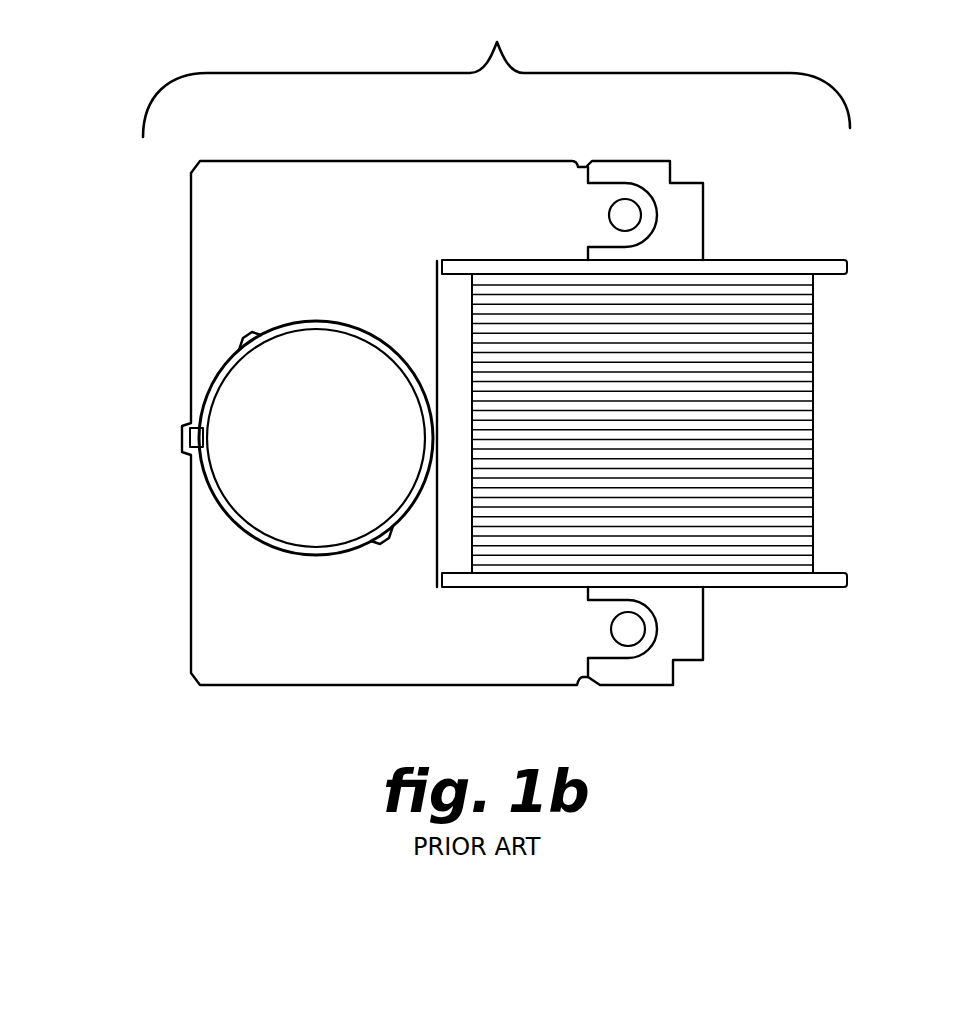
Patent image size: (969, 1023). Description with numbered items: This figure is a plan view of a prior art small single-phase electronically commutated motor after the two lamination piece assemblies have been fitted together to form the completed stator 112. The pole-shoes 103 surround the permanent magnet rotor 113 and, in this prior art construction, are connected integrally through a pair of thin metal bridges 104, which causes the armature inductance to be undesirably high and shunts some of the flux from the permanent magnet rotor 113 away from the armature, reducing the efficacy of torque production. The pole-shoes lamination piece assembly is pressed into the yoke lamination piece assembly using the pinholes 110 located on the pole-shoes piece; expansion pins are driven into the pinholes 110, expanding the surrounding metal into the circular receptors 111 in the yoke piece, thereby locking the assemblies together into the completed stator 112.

The pole-shoes 103 is at (307, 550).
The thin metal bridges 104 is at (427, 377).
The pinholes 110 is at (622, 208).
The circular receptors 111 is at (657, 215).
The completed stator 112 is at (496, 74).
The permanent magnet rotor 113 is at (247, 480).